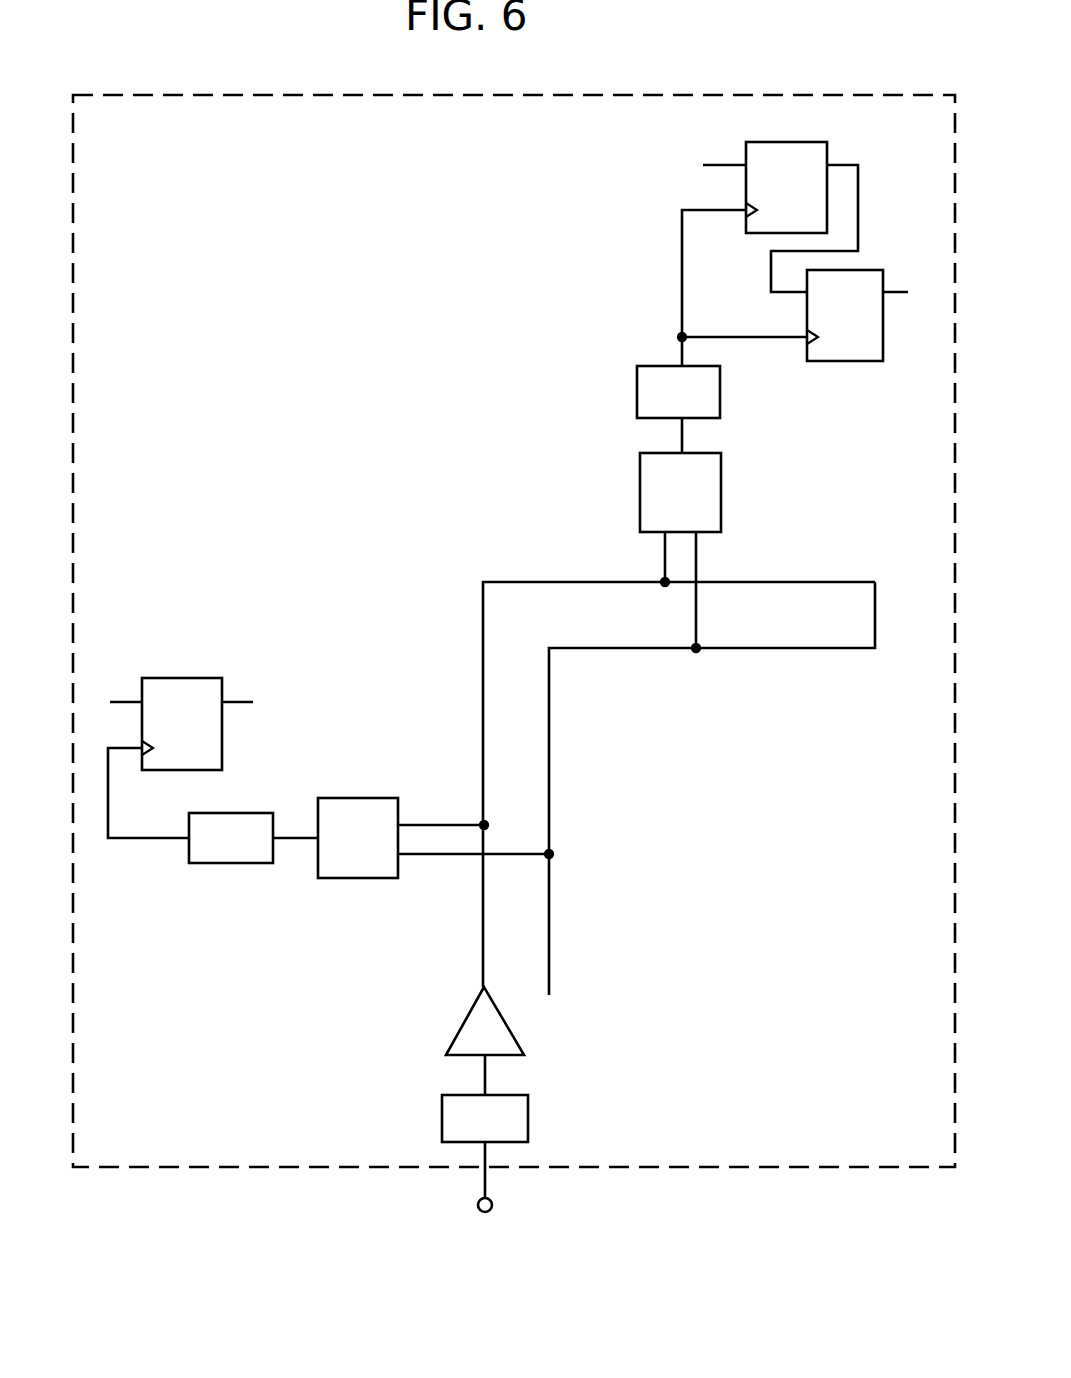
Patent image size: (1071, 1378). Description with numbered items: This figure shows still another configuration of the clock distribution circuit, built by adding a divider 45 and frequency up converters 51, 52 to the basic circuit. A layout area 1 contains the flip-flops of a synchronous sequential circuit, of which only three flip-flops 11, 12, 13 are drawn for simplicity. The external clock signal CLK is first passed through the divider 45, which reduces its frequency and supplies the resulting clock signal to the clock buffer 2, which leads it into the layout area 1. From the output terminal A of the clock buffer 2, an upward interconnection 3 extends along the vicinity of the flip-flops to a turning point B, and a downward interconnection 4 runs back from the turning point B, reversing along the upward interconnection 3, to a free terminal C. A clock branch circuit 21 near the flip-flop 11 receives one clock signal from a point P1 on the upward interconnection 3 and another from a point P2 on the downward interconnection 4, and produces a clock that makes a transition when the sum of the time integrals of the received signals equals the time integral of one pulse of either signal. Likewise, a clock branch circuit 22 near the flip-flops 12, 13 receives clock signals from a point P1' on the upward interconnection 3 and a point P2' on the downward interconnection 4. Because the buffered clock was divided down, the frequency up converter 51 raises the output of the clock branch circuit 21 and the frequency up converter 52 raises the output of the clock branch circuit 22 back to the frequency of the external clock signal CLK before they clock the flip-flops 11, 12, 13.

The layout area 1 is at (843, 1167).
The clock buffer 2 is at (510, 1027).
The upward interconnection 3 is at (513, 580).
The downward interconnection 4 is at (608, 650).
The flip-flop 11 is at (180, 678).
The flip-flop 12 is at (827, 152).
The flip-flop 13 is at (848, 361).
The clock branch circuit 21 is at (358, 878).
The clock branch circuit 22 is at (721, 485).
The divider 45 is at (528, 1112).
The frequency up converter 51 is at (228, 865).
The frequency up converter 52 is at (720, 396).
The point on upward interconnection P1 is at (446, 776).
The point on downward interconnection P2 is at (597, 883).
The point on upward interconnection P1' is at (619, 542).
The point on downward interconnection P2' is at (730, 688).
The output terminal A is at (480, 987).
The turning point B is at (875, 613).
The free terminal C is at (550, 995).
The external clock signal CLK is at (491, 1210).